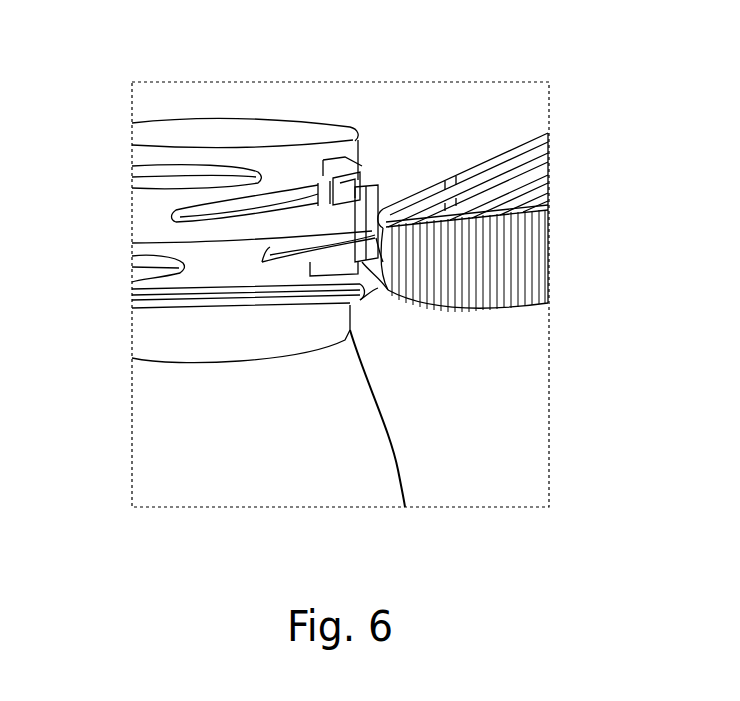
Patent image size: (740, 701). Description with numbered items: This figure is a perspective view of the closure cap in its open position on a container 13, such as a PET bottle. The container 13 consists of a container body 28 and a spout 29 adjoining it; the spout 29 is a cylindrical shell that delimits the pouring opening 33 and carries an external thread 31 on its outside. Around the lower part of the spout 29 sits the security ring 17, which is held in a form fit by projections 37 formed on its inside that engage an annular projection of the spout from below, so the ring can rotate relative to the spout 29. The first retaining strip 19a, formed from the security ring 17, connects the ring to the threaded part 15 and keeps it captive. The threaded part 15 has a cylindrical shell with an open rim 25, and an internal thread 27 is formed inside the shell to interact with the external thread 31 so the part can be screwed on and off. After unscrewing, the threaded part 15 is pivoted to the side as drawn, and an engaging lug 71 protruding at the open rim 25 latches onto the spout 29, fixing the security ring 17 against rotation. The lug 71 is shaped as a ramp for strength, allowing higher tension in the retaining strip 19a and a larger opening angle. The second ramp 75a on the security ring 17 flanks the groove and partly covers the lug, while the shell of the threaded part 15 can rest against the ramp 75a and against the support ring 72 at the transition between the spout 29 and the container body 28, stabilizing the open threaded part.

The container 13 is at (198, 478).
The threaded part 15 is at (550, 218).
The security ring 17 is at (220, 275).
The first retaining strip 19a is at (331, 183).
The open rim 25 is at (462, 178).
The internal thread 27 is at (487, 158).
The container body 28 is at (285, 478).
The spout 29 is at (136, 218).
The external thread 31 is at (136, 176).
The pouring opening 33 is at (210, 127).
The projections 37 is at (136, 270).
The engaging lug 71 is at (376, 188).
The support ring 72 is at (136, 301).
The second ramp 75a is at (365, 300).